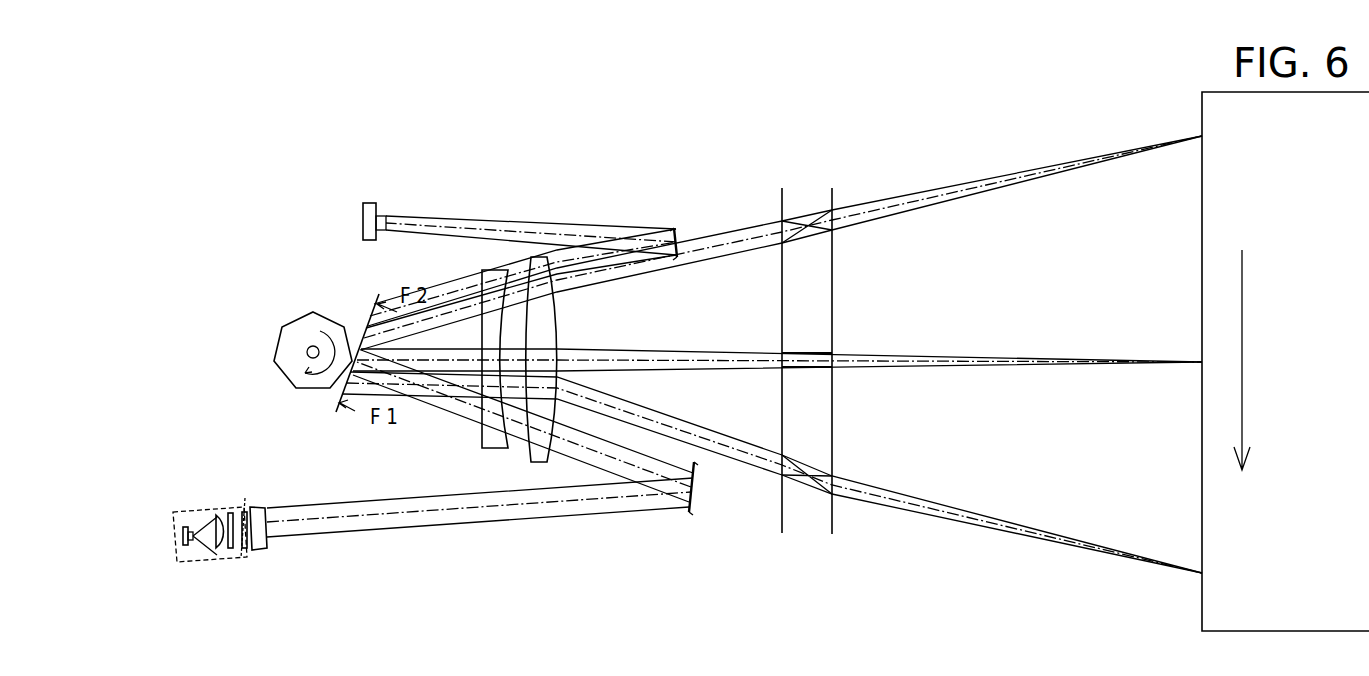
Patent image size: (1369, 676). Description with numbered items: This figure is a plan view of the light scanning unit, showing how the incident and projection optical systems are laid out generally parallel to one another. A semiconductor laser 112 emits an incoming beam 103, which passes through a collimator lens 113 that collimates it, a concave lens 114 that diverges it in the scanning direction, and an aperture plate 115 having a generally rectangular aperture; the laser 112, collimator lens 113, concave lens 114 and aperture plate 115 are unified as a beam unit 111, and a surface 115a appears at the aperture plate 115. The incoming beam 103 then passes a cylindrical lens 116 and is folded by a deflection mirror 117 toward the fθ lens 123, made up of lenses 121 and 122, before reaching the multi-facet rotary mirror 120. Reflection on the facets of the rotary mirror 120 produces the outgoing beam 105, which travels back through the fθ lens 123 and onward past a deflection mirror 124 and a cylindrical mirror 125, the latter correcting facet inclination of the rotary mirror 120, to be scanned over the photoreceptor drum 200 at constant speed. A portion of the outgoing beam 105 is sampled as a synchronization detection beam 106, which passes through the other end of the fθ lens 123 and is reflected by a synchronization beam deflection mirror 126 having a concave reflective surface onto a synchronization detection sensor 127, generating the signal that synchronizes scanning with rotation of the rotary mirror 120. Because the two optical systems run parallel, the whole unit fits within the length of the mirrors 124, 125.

The incoming beam 103 is at (433, 410).
The outgoing beam 105 is at (703, 247).
The synchronization detection beam 106 is at (630, 228).
The beam unit 111 is at (266, 512).
The semiconductor laser 112 is at (184, 527).
The collimator lens 113 is at (218, 514).
The concave lens 114 is at (232, 512).
The aperture plate 115 is at (313, 541).
The lens surface 115a is at (243, 507).
The cylindrical lens 116 is at (267, 549).
The deflection mirror 117 is at (689, 513).
The multi-facet rotary mirror 120 is at (305, 314).
The lens 121 is at (495, 269).
The lens 122 is at (539, 256).
The fθ lens 123 is at (525, 302).
The deflection mirror 124 is at (833, 525).
The cylindrical mirror 125 is at (785, 212).
The synchronization beam deflection mirror 126 is at (677, 227).
The synchronization detection sensor 127 is at (374, 203).
The photoreceptor drum 200 is at (1202, 606).